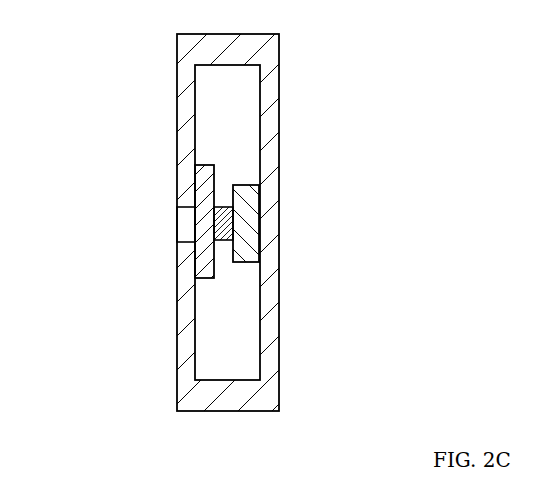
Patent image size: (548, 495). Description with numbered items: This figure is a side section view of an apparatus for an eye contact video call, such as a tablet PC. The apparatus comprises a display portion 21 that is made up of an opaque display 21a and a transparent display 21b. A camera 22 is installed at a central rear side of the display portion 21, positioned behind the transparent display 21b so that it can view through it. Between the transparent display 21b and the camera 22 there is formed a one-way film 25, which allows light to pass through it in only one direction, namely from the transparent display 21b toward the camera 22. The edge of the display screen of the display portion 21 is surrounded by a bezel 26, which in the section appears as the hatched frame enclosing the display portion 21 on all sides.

The display portion 21 is at (103, 220).
The opaque display 21a is at (190, 312).
The transparent display 21b is at (190, 221).
The camera 22 is at (230, 220).
The one-way film 25 is at (214, 170).
The bezel 26 is at (188, 398).